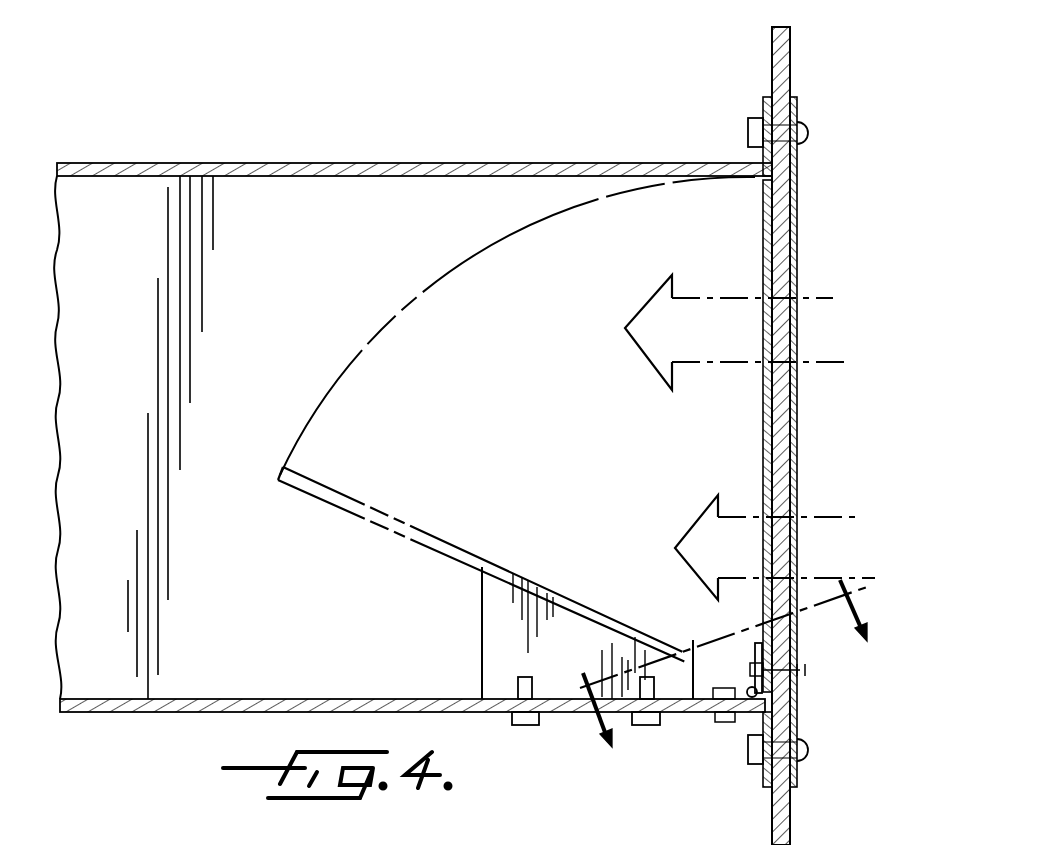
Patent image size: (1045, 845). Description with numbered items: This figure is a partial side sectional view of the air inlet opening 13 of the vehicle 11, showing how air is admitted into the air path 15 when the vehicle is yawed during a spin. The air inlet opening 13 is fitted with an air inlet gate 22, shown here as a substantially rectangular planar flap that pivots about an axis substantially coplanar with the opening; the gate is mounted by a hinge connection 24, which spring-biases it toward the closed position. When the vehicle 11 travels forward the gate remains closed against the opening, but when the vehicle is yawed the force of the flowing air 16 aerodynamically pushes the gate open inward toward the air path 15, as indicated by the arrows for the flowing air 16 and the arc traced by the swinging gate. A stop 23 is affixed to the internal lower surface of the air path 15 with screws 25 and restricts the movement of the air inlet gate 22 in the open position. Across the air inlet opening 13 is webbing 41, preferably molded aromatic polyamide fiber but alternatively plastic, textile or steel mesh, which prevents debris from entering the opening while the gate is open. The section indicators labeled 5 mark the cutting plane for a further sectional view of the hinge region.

The section line 5- 5 is at (717, 645).
The vehicle 11 is at (788, 62).
The air inlet opening 13 is at (797, 401).
The air path 15 is at (312, 165).
The flowing air 16 is at (740, 298).
The air inlet gate 22 is at (775, 255).
The stop 23 is at (482, 628).
The hinge connection 24 is at (742, 670).
The screws 25 is at (537, 725).
The webbing 41 is at (797, 210).